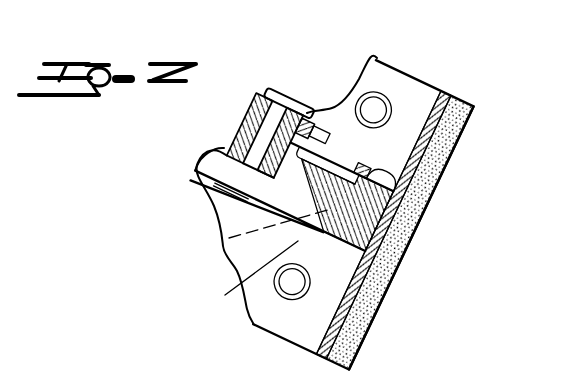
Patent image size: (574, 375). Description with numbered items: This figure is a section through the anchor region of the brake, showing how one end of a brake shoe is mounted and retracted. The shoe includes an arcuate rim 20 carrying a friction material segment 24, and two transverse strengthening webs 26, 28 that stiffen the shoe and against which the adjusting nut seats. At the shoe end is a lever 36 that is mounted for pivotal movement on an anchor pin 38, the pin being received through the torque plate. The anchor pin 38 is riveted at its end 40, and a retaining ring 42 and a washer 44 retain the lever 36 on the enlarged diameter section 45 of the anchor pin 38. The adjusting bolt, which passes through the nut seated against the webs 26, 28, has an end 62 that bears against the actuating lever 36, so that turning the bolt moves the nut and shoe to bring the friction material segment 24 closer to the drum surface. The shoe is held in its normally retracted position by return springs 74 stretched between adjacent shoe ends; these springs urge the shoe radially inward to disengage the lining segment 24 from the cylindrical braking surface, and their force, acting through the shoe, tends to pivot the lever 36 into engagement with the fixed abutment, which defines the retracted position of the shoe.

The arcuate rim 20 is at (450, 150).
The friction material segment 24 is at (378, 290).
The transverse strengthening web 26 is at (371, 314).
The transverse strengthening web 28 is at (400, 168).
The lever 36 is at (298, 229).
The anchor pin 38 is at (214, 222).
The riveted end 40 is at (290, 110).
The retaining ring 42 is at (203, 176).
The washer 44 is at (223, 157).
The enlarged diameter section 45 is at (263, 147).
The bolt end 62 is at (223, 253).
The return spring 74 is at (378, 102).